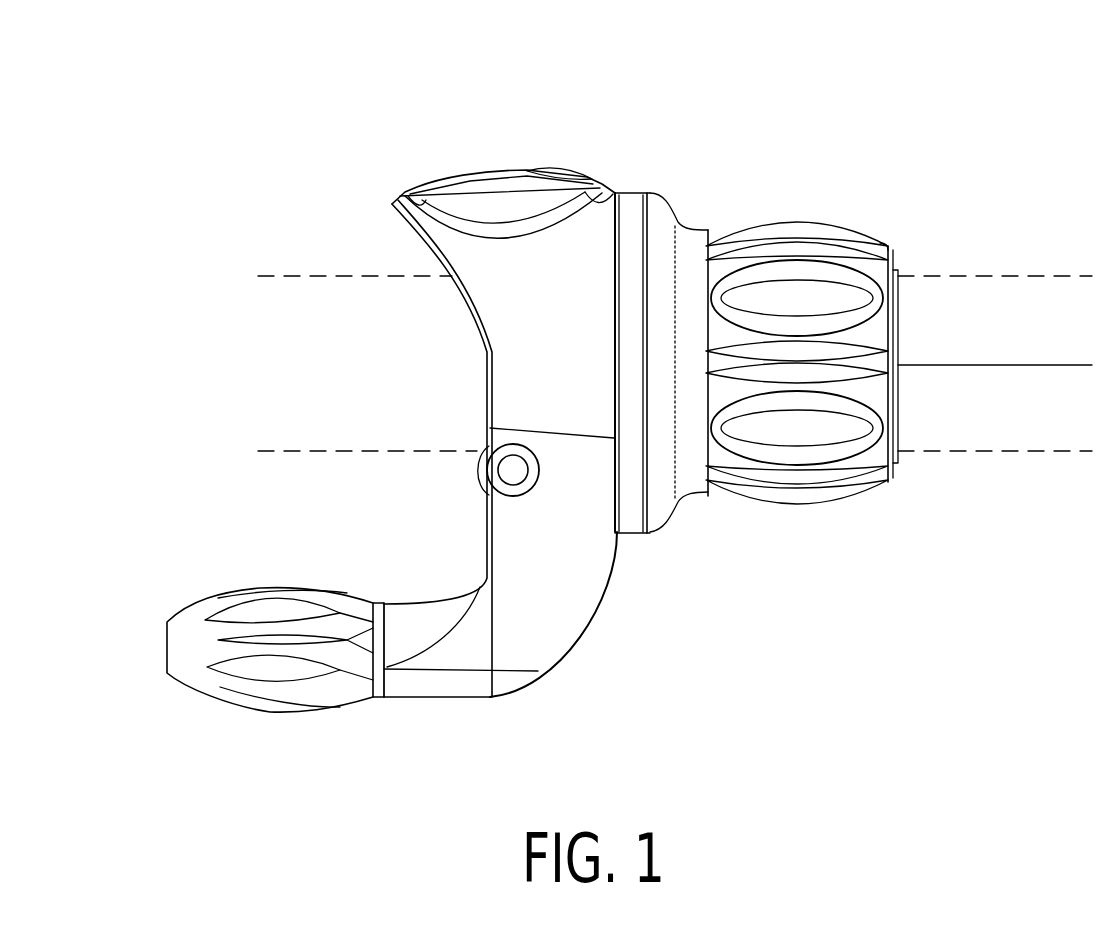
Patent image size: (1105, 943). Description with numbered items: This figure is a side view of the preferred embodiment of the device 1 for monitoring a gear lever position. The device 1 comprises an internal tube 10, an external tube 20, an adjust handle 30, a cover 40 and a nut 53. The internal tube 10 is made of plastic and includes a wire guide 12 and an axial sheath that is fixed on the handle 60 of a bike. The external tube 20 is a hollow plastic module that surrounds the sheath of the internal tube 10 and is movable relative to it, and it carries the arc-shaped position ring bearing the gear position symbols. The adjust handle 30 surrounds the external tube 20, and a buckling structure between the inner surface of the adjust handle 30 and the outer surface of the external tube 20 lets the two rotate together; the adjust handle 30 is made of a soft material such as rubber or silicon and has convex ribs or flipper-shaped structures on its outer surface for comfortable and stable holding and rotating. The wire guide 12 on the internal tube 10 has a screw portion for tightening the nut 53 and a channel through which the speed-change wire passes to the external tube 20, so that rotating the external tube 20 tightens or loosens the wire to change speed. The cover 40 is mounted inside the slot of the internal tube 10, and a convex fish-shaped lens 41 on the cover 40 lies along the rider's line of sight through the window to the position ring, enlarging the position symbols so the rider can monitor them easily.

The device for monitoring gear lever position 1 is at (817, 133).
The internal tube 10 is at (577, 605).
The wire guide 12 is at (450, 687).
The external tube 20 is at (633, 203).
The adjust handle 30 is at (845, 245).
The cover 40 is at (470, 180).
The fish-shaped lens 41 is at (545, 167).
The nut 53 is at (236, 675).
The handle 60 is at (983, 455).